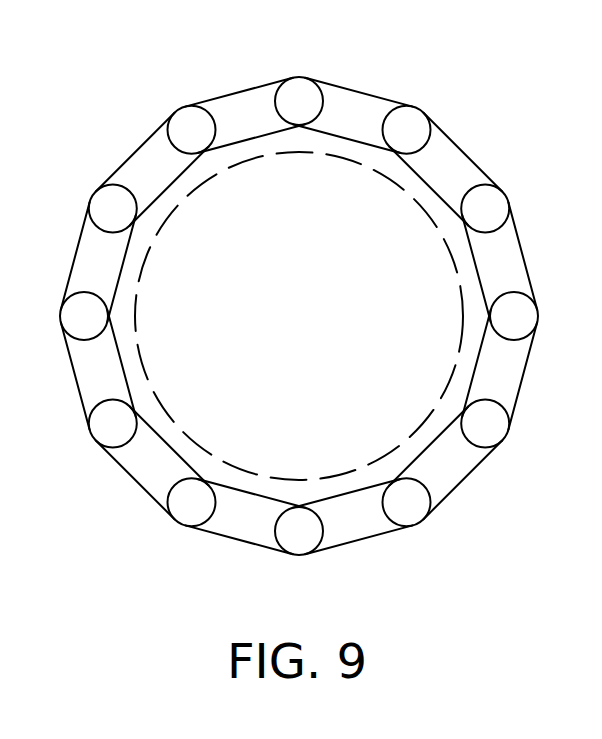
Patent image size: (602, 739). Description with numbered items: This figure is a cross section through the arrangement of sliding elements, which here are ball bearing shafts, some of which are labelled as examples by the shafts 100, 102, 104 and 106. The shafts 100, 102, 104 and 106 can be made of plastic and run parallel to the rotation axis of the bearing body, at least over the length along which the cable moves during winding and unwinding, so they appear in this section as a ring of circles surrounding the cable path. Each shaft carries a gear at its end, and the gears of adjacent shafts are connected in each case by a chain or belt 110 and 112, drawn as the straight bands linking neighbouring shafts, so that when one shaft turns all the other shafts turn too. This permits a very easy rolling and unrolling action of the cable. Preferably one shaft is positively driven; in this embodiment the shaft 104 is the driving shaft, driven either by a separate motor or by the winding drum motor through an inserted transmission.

The ball bearing shaft 100 is at (307, 538).
The ball bearing shaft 102 is at (502, 203).
The ball bearing shaft 104 is at (492, 432).
The ball bearing shaft 106 is at (310, 93).
The chain or belt 110 is at (223, 540).
The chain or belt 112 is at (132, 488).